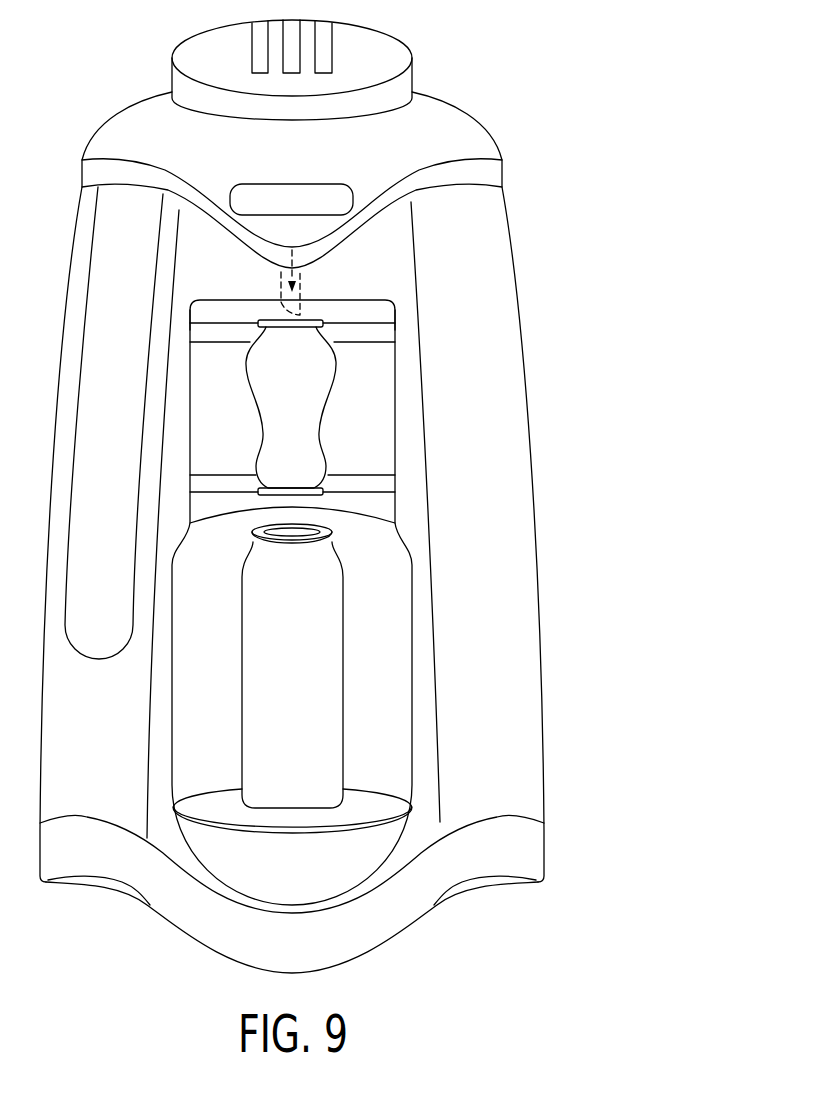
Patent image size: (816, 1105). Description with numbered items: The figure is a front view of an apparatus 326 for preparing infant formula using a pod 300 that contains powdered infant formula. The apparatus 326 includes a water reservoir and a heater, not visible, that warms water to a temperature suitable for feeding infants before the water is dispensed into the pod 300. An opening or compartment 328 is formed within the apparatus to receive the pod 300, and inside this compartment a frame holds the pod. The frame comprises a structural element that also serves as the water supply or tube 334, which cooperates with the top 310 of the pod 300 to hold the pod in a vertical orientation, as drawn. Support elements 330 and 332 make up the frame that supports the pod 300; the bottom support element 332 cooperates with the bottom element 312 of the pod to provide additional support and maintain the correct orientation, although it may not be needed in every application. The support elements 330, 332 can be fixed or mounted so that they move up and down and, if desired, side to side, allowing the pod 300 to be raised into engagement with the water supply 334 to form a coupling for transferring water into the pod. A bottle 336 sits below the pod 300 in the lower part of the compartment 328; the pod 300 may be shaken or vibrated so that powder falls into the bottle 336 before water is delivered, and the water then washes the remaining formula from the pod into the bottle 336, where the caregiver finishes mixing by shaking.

The apparatus 326 is at (563, 138).
The compartment 328 is at (380, 424).
The support element 330 is at (221, 332).
The bottom support element 332 is at (222, 483).
The water supply 334 is at (302, 288).
The pod 300 is at (342, 413).
The top 310 is at (323, 320).
The bottom element 312 is at (275, 496).
The bottle 336 is at (346, 674).